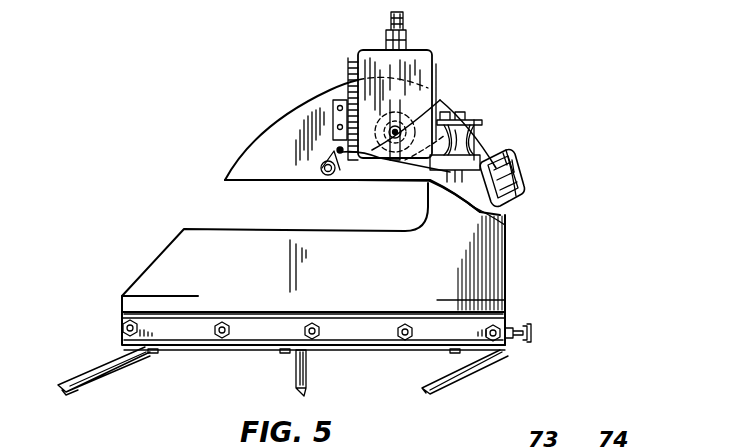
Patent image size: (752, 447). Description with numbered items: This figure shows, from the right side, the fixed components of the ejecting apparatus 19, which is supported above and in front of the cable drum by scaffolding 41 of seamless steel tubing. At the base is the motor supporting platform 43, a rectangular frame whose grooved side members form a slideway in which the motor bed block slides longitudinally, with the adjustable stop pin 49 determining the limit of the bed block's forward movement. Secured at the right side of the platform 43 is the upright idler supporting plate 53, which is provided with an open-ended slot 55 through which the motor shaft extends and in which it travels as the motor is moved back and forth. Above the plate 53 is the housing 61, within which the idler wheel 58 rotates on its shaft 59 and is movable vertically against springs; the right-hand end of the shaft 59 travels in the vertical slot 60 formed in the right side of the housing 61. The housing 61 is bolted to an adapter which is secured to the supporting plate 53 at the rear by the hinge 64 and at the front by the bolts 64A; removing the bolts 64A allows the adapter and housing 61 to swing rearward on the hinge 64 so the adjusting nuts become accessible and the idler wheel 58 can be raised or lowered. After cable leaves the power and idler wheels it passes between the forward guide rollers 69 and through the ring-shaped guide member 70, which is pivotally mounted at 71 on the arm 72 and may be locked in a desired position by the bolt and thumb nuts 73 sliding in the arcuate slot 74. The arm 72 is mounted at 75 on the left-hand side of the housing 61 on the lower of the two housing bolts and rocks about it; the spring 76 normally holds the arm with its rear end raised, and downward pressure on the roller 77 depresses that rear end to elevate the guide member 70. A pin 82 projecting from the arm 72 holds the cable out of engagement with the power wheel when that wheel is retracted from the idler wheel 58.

The ejecting apparatus 19 is at (388, 300).
The scaffolding 41 is at (118, 362).
The motor supporting platform 43 is at (268, 352).
The adjustable stop pin 49 is at (535, 333).
The idler supporting plate 53 is at (500, 272).
The open-ended slot 55 is at (250, 186).
The idler wheel 58 is at (445, 98).
The shaft 59 is at (440, 100).
The vertical slot 60 is at (396, 162).
The housing 61 is at (425, 60).
The hinge 64 is at (318, 108).
The bolts 64A is at (470, 112).
The forward guide rollers 69 is at (476, 128).
The guide member 70 is at (522, 170).
The pivot 71 is at (520, 214).
The arm 72 is at (462, 196).
The bolt and thumb nuts 73 is at (507, 160).
The arcuate slot 74 is at (512, 162).
The arm mounting 75 is at (392, 120).
The spring 76 is at (350, 80).
The roller 77 is at (328, 176).
The pin 82 is at (350, 168).